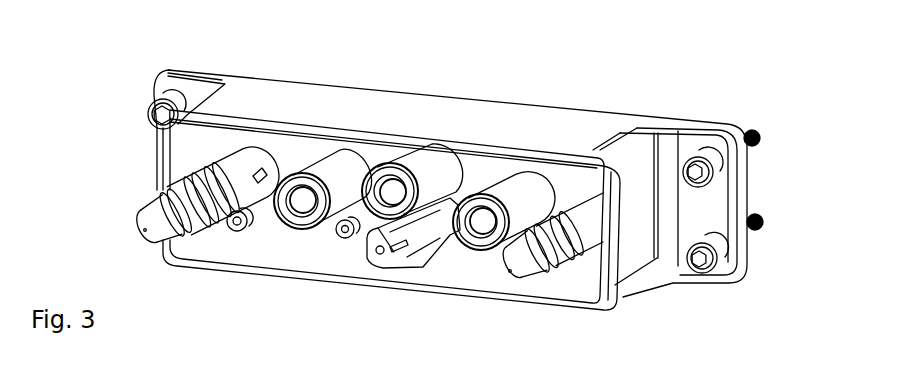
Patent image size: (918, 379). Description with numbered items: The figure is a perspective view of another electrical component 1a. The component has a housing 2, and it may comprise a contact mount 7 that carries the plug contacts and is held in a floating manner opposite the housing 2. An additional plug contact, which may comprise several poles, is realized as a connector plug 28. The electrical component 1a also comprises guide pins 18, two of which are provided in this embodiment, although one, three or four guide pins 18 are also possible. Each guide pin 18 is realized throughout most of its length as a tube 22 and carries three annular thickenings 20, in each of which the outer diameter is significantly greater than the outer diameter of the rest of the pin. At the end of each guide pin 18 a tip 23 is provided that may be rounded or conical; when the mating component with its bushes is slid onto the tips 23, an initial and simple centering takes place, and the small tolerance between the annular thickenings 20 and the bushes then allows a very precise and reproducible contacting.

The electrical component 1a is at (146, 73).
The housing 2 is at (277, 92).
The contact mount 7 is at (295, 155).
The guide pin 18 is at (241, 190).
The annular thickening 20 is at (202, 181).
The tube 22 is at (195, 212).
The tip 23 is at (143, 230).
The connector plug 28 is at (395, 277).